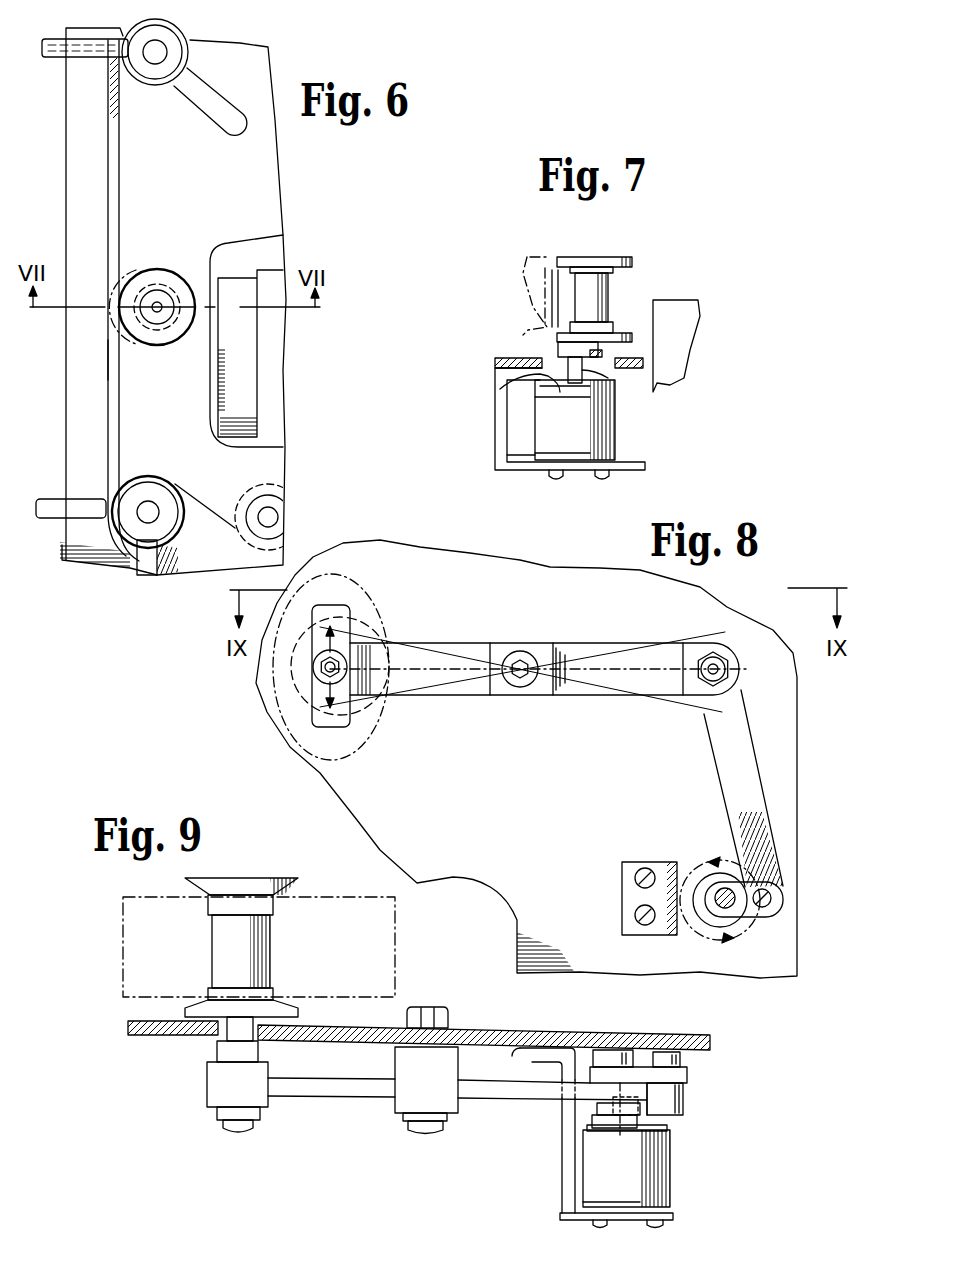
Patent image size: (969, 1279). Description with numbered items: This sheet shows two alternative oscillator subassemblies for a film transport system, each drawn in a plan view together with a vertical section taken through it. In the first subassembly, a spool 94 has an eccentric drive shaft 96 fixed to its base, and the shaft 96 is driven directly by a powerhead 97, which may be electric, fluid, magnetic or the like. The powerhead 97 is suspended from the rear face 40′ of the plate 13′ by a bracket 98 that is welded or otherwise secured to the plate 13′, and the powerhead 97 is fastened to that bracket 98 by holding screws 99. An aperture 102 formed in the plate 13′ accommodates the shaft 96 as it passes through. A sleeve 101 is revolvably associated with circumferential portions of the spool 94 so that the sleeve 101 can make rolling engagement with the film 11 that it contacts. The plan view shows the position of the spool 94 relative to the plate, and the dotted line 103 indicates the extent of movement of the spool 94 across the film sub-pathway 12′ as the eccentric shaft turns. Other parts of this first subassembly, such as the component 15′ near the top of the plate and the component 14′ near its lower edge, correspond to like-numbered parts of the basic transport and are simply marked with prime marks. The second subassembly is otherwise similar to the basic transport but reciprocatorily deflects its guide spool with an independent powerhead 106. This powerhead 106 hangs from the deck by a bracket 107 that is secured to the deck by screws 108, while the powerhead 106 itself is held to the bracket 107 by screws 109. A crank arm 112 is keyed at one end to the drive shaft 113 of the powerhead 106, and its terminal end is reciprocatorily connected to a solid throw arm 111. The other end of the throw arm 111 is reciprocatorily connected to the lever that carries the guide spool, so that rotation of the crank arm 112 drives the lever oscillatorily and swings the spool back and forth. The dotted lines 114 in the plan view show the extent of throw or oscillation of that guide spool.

In FIG. 6, the film 11 is at (107, 173).
In FIG. 7, the film 11 is at (524, 256).
In FIG. 9, the film 11 is at (337, 902).
In FIG. 6, the plate 13′ is at (268, 176).
In FIG. 7, the plate 13′ is at (500, 358).
In FIG. 6, the guide roller 15′ is at (157, 88).
In FIG. 6, the dotted line 103 is at (133, 268).
In FIG. 7, the dotted line 103 is at (548, 310).
In FIG. 6, the spool 94 is at (182, 284).
In FIG. 7, the spool 94 is at (642, 259).
In FIG. 6, the eccentric drive shaft 96 is at (148, 346).
In FIG. 7, the eccentric drive shaft 96 is at (608, 378).
In FIG. 6, the film sub-pathway 12′ is at (106, 354).
In FIG. 6, the drive roller 14′ is at (154, 477).
In FIG. 7, the sleeve 101 is at (613, 297).
In FIG. 7, the aperture 102 is at (500, 389).
In FIG. 7, the rear face 40′ is at (690, 382).
In FIG. 7, the bracket 98 is at (496, 443).
In FIG. 7, the powerhead 97 is at (618, 437).
In FIG. 7, the holding screws 99 is at (603, 479).
In FIG. 8, the dotted lines 114 is at (382, 593).
In FIG. 8, the solid throw arm 111 is at (717, 763).
In FIG. 9, the solid throw arm 111 is at (688, 1077).
In FIG. 8, the powerhead 106 is at (717, 863).
In FIG. 9, the powerhead 106 is at (675, 1174).
In FIG. 8, the bracket 107 is at (627, 868).
In FIG. 9, the bracket 107 is at (565, 1177).
In FIG. 8, the screws 108 is at (643, 913).
In FIG. 9, the screws 108 is at (533, 1058).
In FIG. 8, the drive shaft 113 is at (717, 913).
In FIG. 9, the drive shaft 113 is at (642, 1133).
In FIG. 8, the crank arm 112 is at (737, 920).
In FIG. 9, the crank arm 112 is at (683, 1107).
In FIG. 9, the screws 109 is at (655, 1228).